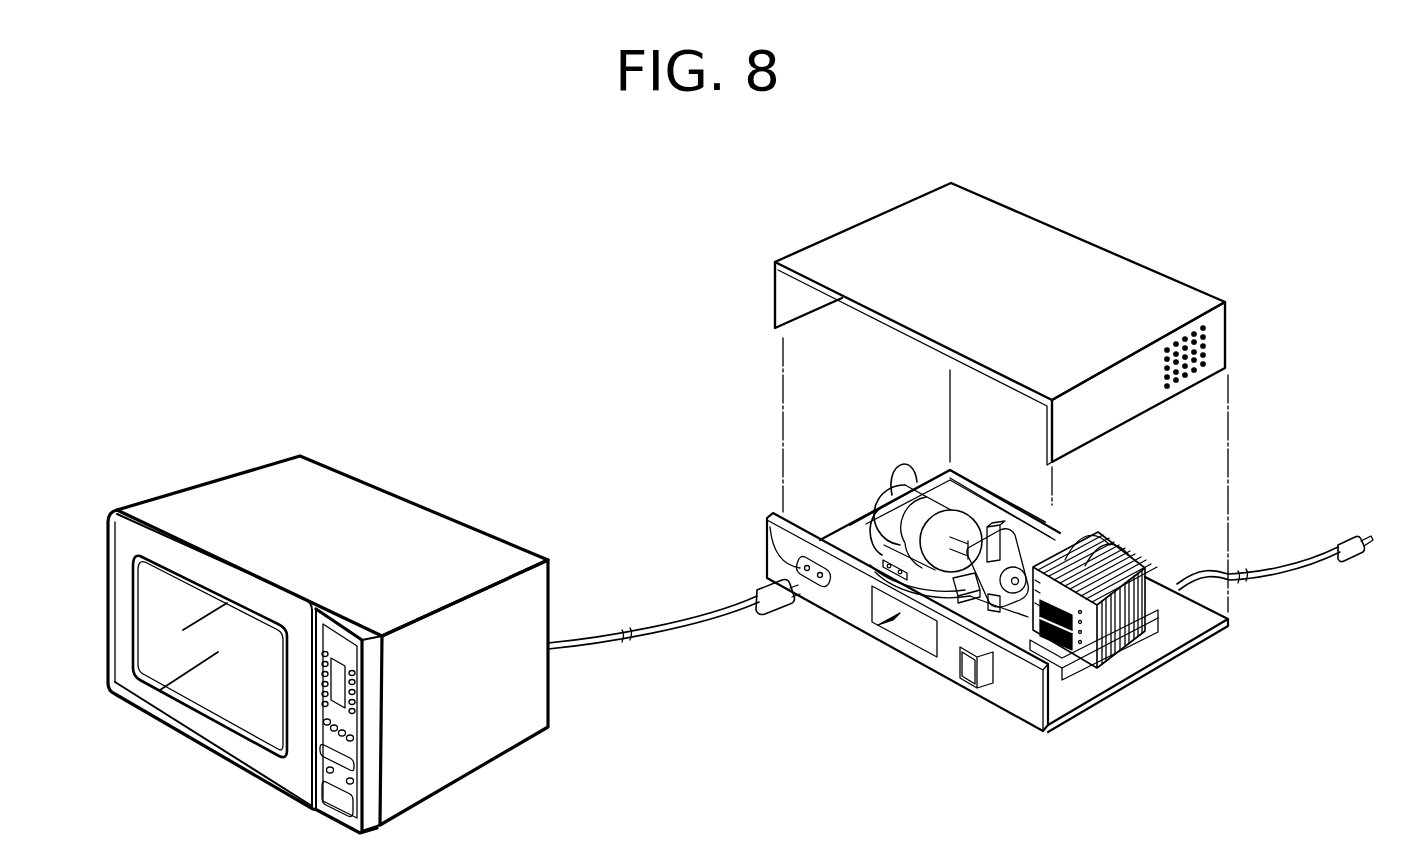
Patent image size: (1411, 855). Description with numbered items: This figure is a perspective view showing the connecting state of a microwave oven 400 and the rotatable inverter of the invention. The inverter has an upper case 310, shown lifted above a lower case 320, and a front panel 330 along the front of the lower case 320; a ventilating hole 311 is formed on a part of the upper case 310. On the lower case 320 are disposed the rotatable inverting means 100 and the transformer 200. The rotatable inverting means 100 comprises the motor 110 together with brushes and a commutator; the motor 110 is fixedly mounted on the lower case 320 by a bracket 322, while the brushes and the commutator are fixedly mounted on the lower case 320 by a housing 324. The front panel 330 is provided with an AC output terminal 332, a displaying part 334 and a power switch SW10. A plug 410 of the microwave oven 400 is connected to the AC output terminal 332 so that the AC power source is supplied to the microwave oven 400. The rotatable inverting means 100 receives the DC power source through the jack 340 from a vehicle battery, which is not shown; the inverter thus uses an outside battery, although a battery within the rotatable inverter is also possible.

The rotatable inverting means 100 is at (966, 507).
The motor 110 is at (966, 504).
The transformer 200 is at (1138, 568).
The upper case 310 is at (1044, 323).
The ventilating hole 311 is at (1213, 355).
The lower case 320 is at (1120, 687).
The bracket 322 is at (905, 522).
The housing 324 is at (998, 533).
The front panel 330 is at (842, 597).
The AC output terminal 332 is at (766, 518).
The displaying part 334 is at (912, 630).
The jack 340 is at (1342, 537).
The microwave oven 400 is at (360, 493).
The plug 410 is at (757, 592).
The power switch SW10 is at (978, 675).